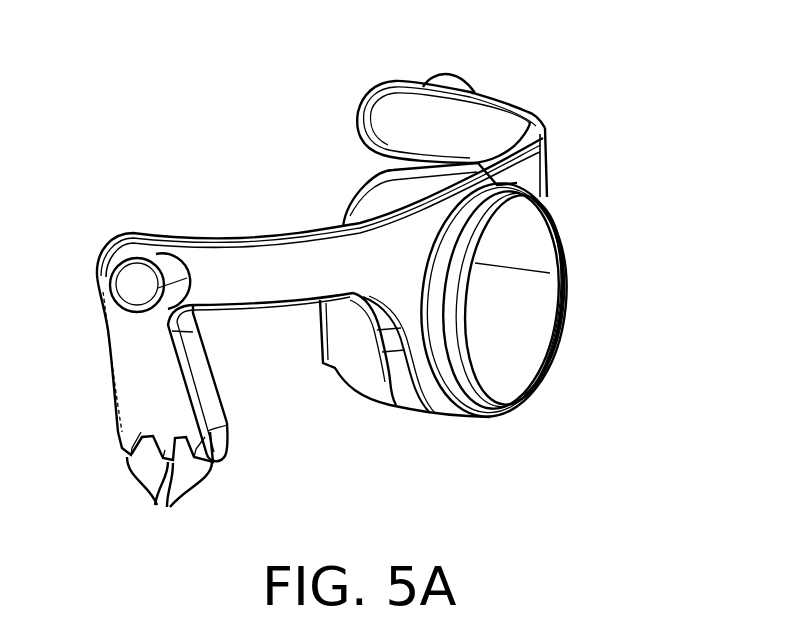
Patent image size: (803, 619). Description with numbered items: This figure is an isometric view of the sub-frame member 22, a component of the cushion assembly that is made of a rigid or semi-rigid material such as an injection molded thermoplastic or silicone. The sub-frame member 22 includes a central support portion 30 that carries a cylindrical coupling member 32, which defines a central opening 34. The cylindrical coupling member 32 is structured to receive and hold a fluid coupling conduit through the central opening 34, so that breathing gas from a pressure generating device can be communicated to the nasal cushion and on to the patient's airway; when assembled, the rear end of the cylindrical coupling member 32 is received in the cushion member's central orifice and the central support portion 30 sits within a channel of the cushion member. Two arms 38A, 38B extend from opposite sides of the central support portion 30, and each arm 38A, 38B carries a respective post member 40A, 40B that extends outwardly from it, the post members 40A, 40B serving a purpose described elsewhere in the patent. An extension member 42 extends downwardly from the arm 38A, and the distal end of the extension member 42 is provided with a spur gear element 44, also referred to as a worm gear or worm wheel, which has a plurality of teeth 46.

The sub-frame member 22 is at (620, 83).
The central support portion 30 is at (380, 258).
The cylindrical coupling member 32 is at (378, 192).
The central opening 34 is at (520, 337).
The arm 38A is at (233, 270).
The arm 38B is at (546, 174).
The post member 40A is at (143, 270).
The post member 40B is at (450, 87).
The extension member 42 is at (130, 354).
The spur gear element 44 is at (130, 437).
The teeth 46 is at (169, 497).